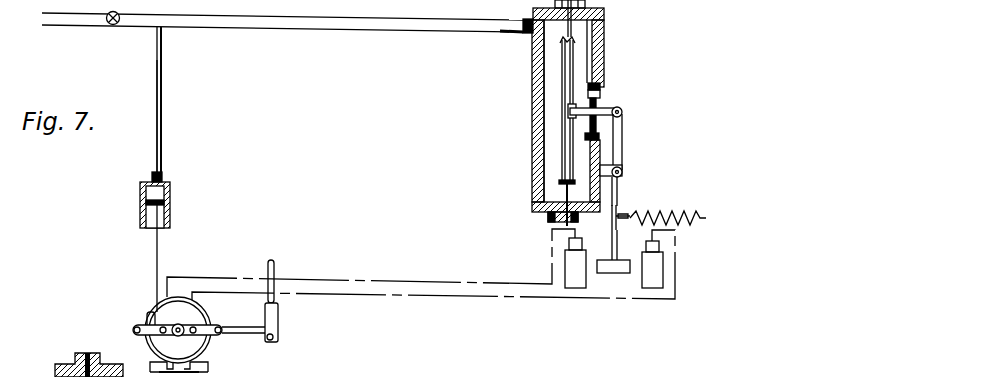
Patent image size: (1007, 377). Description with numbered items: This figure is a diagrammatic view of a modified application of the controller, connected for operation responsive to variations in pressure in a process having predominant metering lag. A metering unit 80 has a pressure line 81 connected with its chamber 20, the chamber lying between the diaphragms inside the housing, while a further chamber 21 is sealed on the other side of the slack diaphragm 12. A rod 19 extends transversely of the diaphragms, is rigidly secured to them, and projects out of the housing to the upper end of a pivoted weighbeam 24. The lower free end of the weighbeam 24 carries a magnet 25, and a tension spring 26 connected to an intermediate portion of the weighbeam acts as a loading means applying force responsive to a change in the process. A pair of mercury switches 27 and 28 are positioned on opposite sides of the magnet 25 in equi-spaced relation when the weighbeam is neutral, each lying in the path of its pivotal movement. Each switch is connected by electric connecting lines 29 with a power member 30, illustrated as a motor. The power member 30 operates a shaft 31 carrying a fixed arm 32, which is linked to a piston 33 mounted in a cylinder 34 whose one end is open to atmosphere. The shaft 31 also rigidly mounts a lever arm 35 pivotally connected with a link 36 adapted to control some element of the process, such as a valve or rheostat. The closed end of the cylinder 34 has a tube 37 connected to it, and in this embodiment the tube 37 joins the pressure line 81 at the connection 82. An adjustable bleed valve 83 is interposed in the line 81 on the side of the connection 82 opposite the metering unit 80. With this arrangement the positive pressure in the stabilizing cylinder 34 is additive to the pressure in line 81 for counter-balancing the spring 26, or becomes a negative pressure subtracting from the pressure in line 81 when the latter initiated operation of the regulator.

The slack diaphragm 12 is at (556, 192).
The rod 19 is at (605, 110).
The chamber 20 is at (547, 85).
The chamber 21 is at (580, 60).
The weighbeam 24 is at (620, 140).
The magnet 25 is at (614, 273).
The tension spring 26 is at (667, 213).
The mercury switch 27 is at (566, 268).
The mercury switch 28 is at (655, 277).
The electric connecting lines 29 is at (420, 300).
The power member 30 is at (178, 310).
The shaft 31 is at (185, 325).
The arm 32 is at (147, 322).
The piston 33 is at (162, 210).
The cylinder 34 is at (158, 196).
The lever arm 35 is at (247, 333).
The link 36 is at (275, 270).
The tube 37 is at (161, 113).
The metering unit 80 is at (529, 150).
The pressure line 81 is at (415, 27).
The connection 82 is at (163, 30).
The adjustable bleed valve 83 is at (113, 25).